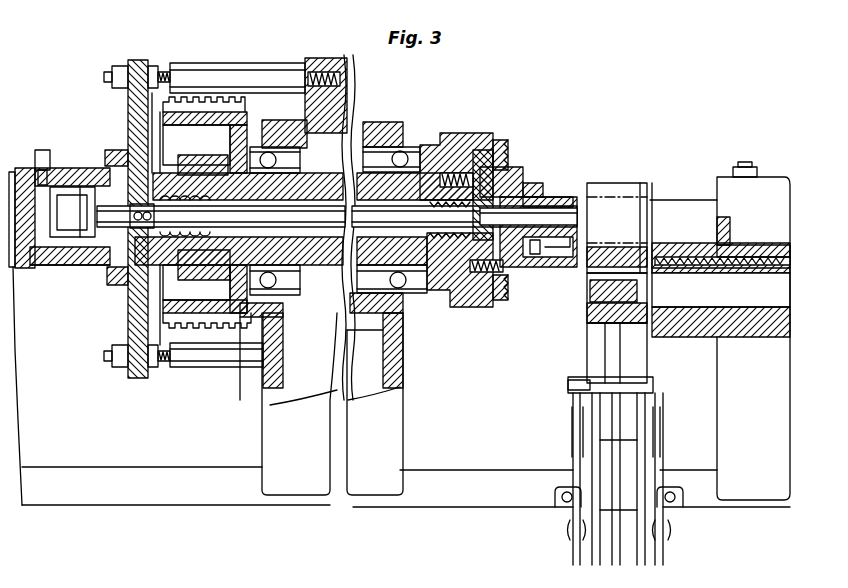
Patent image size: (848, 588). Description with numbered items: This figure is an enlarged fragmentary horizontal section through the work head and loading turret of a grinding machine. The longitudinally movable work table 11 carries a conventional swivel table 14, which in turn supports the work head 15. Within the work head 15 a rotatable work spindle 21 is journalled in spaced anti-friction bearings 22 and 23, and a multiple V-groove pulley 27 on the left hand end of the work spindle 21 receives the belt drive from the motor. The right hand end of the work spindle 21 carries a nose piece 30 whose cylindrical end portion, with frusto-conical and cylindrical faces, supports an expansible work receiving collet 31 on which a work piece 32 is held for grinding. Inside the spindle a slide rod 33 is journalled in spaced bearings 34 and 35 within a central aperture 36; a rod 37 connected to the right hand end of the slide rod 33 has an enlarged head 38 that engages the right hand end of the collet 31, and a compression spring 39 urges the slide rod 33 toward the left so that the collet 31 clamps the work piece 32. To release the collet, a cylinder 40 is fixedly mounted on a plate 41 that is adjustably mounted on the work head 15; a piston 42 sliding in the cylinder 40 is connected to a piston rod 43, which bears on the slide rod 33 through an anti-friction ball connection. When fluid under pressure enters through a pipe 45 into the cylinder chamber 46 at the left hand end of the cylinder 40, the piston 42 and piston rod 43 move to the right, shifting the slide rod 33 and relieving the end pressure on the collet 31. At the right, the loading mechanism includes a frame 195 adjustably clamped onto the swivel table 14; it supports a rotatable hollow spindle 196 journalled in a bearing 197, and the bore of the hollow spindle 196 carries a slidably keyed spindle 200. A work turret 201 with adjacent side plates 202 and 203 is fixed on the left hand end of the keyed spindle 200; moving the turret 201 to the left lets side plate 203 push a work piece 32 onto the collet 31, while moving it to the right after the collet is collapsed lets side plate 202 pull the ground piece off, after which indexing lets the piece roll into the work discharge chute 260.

The work table 11 is at (437, 497).
The swivel table 14 is at (505, 453).
The work head 15 is at (303, 455).
The work spindle 21 is at (433, 150).
The anti-friction bearing 22 is at (272, 148).
The anti-friction bearing 23 is at (388, 142).
The multiple V-groove pulley 27 is at (198, 105).
The nose piece 30 is at (553, 205).
The expansible work receiving collet 31 is at (548, 195).
The work piece 32 is at (528, 180).
The slide rod 33 is at (403, 220).
The bearing 34 is at (243, 210).
The bearing 35 is at (470, 165).
The central aperture 36 is at (325, 237).
The rod 37 is at (518, 246).
The enlarged head 38 is at (570, 245).
The compression spring 39 is at (195, 229).
The cylinder 40 is at (92, 252).
The plate 41 is at (130, 106).
The piston 42 is at (65, 238).
The piston rod 43 is at (68, 172).
The pipe 45 is at (43, 150).
The cylinder chamber 46 is at (13, 168).
The frame 195 is at (766, 480).
The rotatable hollow spindle 196 is at (760, 260).
The bearing 197 is at (697, 250).
The slidably keyed spindle 200 is at (721, 290).
The work turret 201 is at (628, 322).
The side plate 202 is at (587, 345).
The side plate 203 is at (650, 358).
The work discharge chute 260 is at (660, 553).